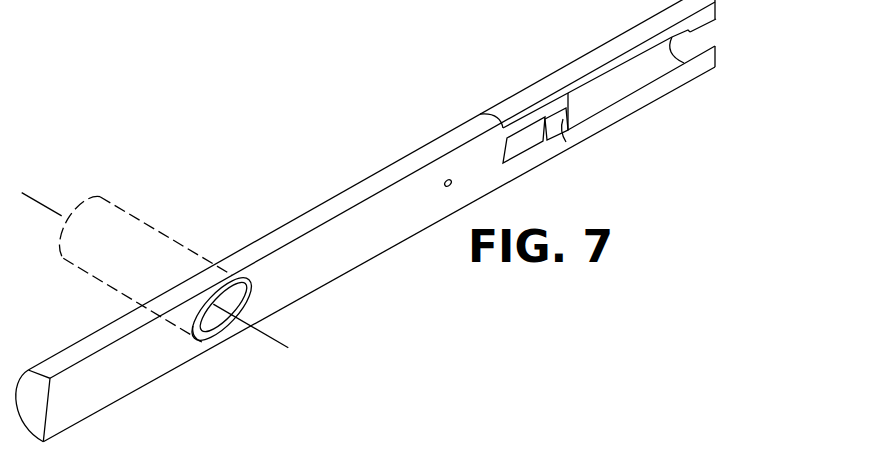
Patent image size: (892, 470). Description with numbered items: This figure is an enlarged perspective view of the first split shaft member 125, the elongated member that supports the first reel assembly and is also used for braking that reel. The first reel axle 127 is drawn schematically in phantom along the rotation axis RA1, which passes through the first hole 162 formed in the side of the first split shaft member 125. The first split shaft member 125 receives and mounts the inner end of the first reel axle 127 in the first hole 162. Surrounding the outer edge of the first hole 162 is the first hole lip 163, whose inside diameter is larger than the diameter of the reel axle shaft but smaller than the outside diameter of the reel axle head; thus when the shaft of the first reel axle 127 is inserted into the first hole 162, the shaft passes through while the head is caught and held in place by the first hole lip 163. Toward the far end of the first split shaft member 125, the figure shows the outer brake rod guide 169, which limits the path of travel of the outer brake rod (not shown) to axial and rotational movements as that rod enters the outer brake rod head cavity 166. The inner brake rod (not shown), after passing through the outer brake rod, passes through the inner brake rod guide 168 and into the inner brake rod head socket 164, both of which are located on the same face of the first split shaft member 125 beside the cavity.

The first split shaft member 125 is at (490, 180).
The first reel axle 127 is at (106, 284).
The rotation axis RA1 is at (268, 330).
The first hole 162 is at (242, 298).
The first hole lip 163 is at (203, 328).
The inner brake rod head socket 164 is at (520, 147).
The outer brake rod head cavity 166 is at (643, 78).
The inner brake rod guide 168 is at (557, 126).
The outer brake rod guide 169 is at (698, 40).